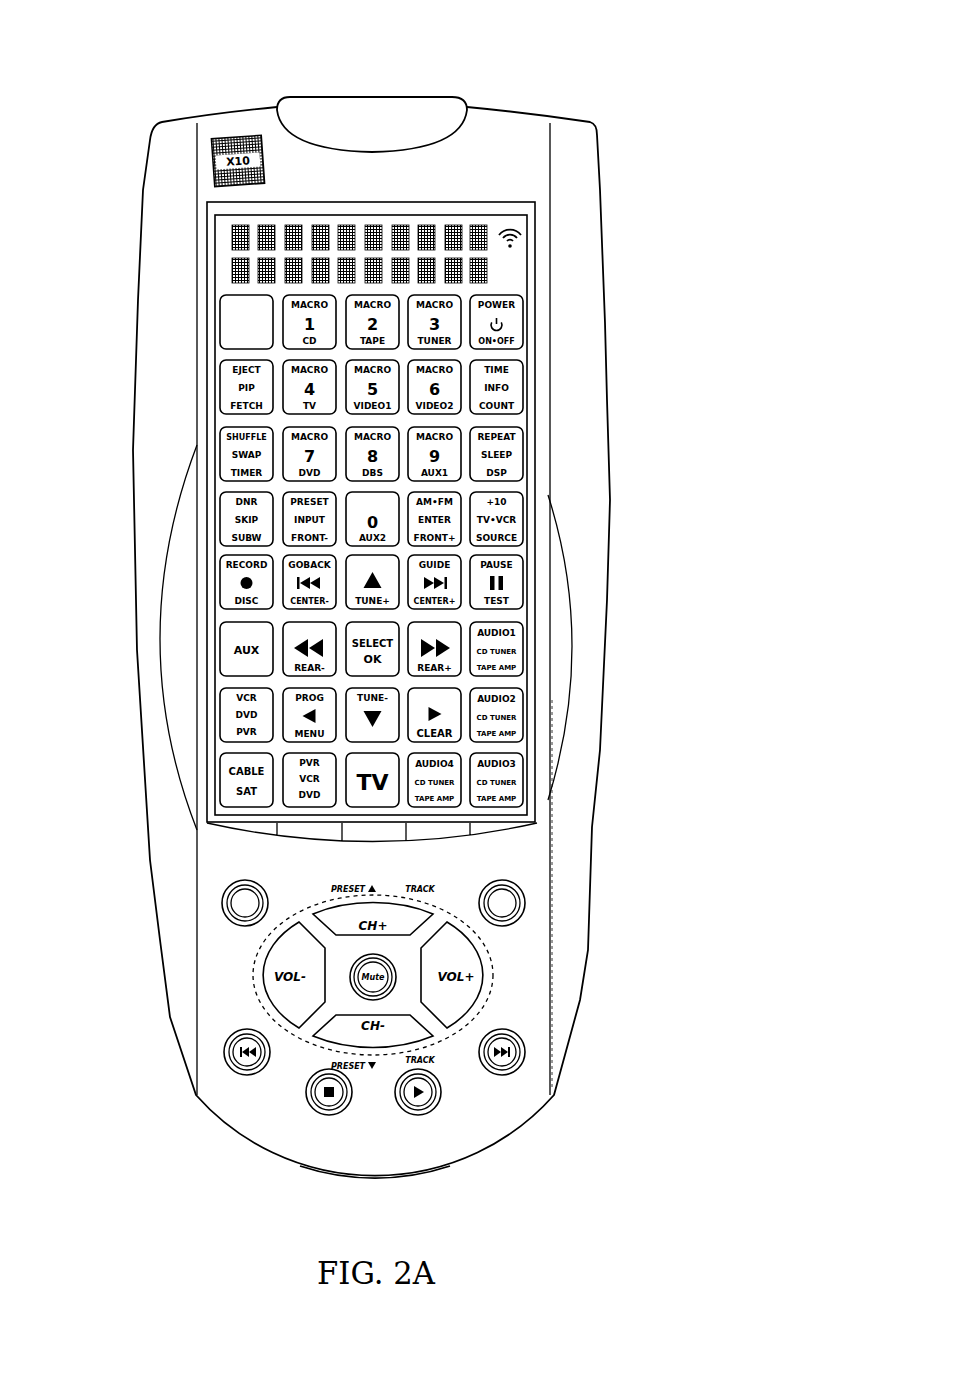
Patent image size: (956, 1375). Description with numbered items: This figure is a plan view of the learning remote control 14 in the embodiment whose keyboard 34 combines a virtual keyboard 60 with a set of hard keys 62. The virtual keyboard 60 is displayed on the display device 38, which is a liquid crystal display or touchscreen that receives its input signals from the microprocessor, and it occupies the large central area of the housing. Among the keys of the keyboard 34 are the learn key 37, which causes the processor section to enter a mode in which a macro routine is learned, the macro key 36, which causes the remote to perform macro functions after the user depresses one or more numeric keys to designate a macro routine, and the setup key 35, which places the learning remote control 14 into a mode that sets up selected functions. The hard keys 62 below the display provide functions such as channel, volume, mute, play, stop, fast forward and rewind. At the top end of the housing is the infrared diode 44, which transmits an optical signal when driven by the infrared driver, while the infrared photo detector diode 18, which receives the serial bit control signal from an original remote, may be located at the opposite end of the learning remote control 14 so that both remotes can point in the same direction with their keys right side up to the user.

The learning remote control 14 is at (672, 315).
The infrared photo detector diode 18 is at (352, 1185).
The keyboard 34 is at (576, 789).
The setup key 35 is at (526, 910).
The macro key 36 is at (224, 902).
The learn key 37 is at (222, 332).
The display device 38 is at (527, 225).
The infrared diode 44 is at (374, 90).
The virtual keyboard 60 is at (576, 468).
The hard keys 62 is at (235, 1116).